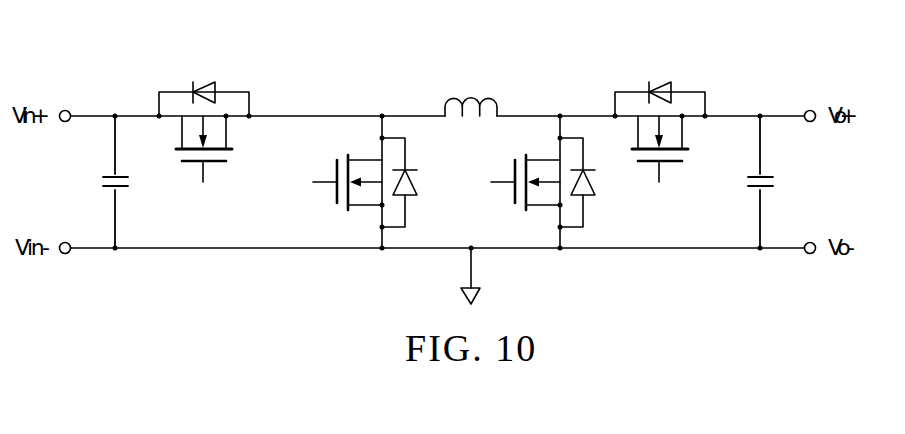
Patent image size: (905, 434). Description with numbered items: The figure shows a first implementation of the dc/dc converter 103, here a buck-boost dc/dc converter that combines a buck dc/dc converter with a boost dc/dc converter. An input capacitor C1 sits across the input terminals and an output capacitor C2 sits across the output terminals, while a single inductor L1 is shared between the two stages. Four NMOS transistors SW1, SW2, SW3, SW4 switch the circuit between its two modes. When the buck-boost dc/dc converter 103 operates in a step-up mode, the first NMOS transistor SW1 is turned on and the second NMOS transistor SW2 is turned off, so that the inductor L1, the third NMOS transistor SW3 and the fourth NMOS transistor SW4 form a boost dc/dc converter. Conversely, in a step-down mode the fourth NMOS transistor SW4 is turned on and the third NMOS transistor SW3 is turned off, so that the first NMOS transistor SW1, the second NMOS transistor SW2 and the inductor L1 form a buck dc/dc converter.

The dc/dc converter 103 is at (660, 105).
The first NMOS transistor SW1 is at (204, 147).
The second NMOS transistor SW2 is at (343, 182).
The third NMOS transistor SW3 is at (521, 182).
The fourth NMOS transistor SW4 is at (660, 146).
The input capacitor C1 is at (100, 182).
The output capacitor C2 is at (744, 182).
The inductor L1 is at (471, 94).